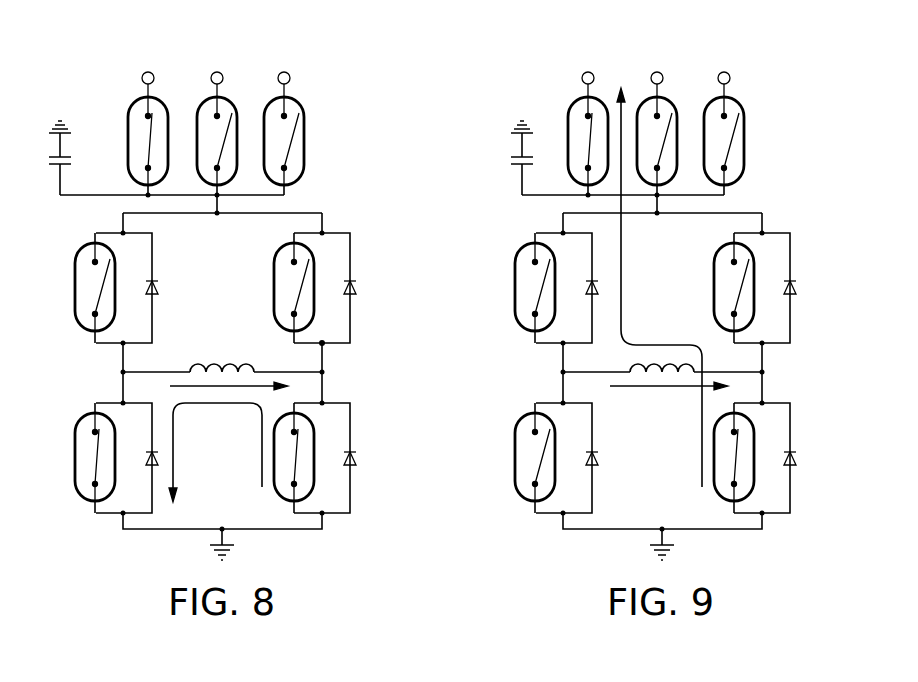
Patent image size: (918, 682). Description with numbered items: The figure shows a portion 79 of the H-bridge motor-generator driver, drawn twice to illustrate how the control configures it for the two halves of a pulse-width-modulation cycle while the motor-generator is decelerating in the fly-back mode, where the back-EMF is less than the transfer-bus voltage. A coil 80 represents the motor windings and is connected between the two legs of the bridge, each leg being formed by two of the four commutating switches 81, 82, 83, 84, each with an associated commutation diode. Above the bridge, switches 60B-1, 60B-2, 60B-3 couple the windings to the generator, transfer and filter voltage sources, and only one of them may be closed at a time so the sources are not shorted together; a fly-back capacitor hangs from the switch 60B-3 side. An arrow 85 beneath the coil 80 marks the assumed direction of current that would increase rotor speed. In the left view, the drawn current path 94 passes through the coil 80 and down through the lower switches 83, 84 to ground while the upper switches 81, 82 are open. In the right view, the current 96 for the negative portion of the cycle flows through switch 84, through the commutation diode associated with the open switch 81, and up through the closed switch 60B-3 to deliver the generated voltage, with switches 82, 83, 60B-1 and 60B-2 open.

In FIG. 8, the portion of H-bridge M/G driver 79 is at (333, 77).
In FIG. 9, the portion of H-bridge M/G driver 79 is at (773, 77).
In FIG. 8, the switch 60B-1 is at (304, 125).
In FIG. 9, the switch 60B-1 is at (744, 125).
In FIG. 8, the switch 60B-2 is at (237, 148).
In FIG. 9, the switch 60B-2 is at (677, 148).
In FIG. 8, the switch 60B-3 is at (128, 118).
In FIG. 9, the switch 60B-3 is at (568, 120).
In FIG. 8, the coil 80 is at (230, 364).
In FIG. 9, the coil 80 is at (670, 364).
In FIG. 8, the commutating switch 81 is at (77, 273).
In FIG. 9, the commutating switch 81 is at (517, 273).
In FIG. 8, the commutating switch 82 is at (275, 273).
In FIG. 9, the commutating switch 82 is at (715, 273).
In FIG. 8, the commutating switch 83 is at (77, 443).
In FIG. 9, the commutating switch 83 is at (517, 443).
In FIG. 8, the commutating switch 84 is at (275, 443).
In FIG. 9, the commutating switch 84 is at (715, 443).
In FIG. 8, the arrow 85 is at (214, 388).
In FIG. 9, the arrow 85 is at (654, 388).
In FIG. 8, the current flow 94 is at (175, 472).
In FIG. 9, the current flow 96 is at (623, 232).